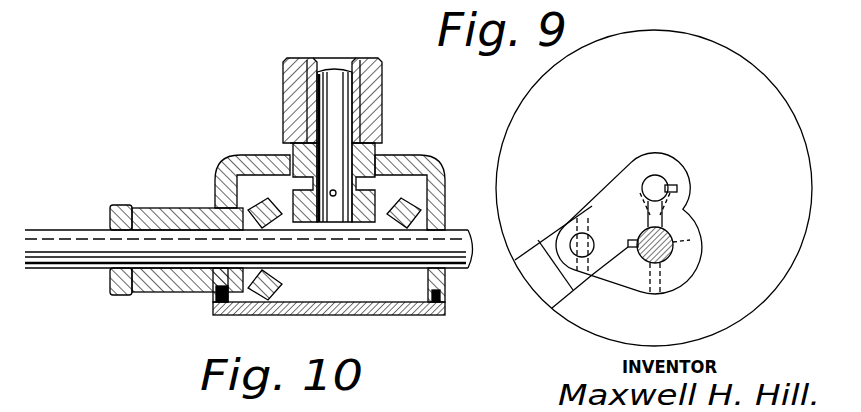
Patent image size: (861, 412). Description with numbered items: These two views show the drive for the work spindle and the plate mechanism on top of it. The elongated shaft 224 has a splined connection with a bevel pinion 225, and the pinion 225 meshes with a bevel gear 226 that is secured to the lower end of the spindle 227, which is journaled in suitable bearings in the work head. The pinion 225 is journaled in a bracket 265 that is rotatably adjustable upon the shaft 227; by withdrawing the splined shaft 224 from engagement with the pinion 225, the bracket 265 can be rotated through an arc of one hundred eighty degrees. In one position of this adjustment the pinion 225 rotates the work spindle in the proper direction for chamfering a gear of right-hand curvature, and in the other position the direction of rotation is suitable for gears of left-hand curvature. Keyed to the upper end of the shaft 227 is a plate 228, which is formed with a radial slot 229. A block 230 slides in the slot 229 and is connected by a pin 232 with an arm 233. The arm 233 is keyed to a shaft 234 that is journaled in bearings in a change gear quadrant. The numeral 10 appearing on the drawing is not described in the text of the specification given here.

In FIG. 9, the dispensing device assembly 10 is at (653, 0).
In FIG. 10, the elongated shaft 224 is at (395, 252).
In FIG. 10, the bevel pinion 225 is at (214, 284).
In FIG. 10, the bevel gear 226 is at (404, 200).
In FIG. 10, the spindle 227 is at (340, 100).
In FIG. 9, the spindle 227 is at (657, 186).
In FIG. 9, the plate 228 is at (752, 72).
In FIG. 9, the radial slot 229 is at (547, 290).
In FIG. 9, the block 230 is at (608, 198).
In FIG. 9, the pin 232 is at (571, 242).
In FIG. 9, the arm 233 is at (633, 288).
In FIG. 9, the shaft 234 is at (686, 233).
In FIG. 10, the bracket 265 is at (400, 163).